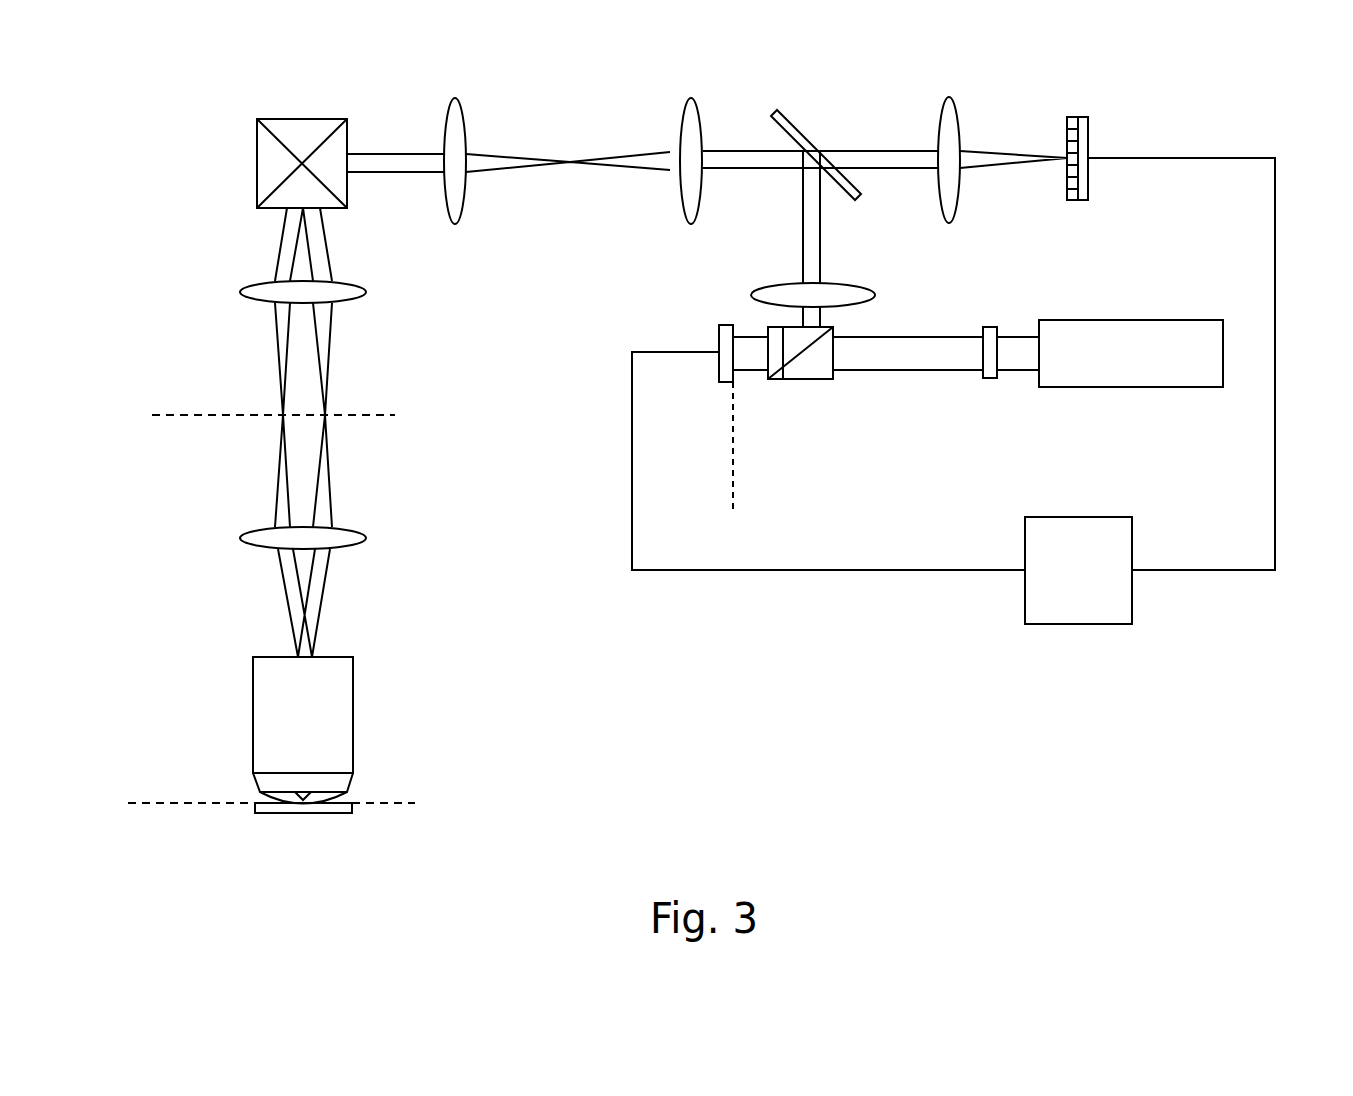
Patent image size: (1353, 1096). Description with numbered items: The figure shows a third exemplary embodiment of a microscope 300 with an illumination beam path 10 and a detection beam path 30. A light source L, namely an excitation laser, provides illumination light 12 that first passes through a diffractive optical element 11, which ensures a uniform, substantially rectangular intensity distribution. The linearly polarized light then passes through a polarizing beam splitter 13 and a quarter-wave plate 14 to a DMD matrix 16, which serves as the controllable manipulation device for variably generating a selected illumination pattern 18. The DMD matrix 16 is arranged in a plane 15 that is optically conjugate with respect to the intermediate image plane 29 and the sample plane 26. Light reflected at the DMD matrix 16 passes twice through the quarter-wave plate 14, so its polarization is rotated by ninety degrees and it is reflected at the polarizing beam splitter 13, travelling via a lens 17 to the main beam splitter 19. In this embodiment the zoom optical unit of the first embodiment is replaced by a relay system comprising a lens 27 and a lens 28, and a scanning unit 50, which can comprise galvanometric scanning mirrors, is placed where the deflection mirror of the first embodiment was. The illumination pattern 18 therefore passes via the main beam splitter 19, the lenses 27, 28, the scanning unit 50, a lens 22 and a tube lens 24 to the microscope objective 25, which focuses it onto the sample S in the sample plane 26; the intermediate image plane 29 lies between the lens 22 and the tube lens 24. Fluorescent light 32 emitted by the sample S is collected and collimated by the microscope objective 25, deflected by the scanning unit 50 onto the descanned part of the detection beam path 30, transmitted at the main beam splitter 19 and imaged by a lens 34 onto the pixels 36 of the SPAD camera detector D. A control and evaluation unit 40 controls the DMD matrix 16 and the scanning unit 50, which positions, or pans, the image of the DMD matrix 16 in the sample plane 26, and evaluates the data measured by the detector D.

The illumination beam path 10 is at (940, 268).
The diffractive optical element 11 is at (990, 382).
The illumination light 12 is at (893, 372).
The polarizing beam splitter 13 is at (818, 383).
The quarter-wave plate 14 is at (780, 383).
The plane 15 is at (733, 487).
The DMD matrix 16 is at (720, 372).
The lens 17 is at (758, 292).
The illumination pattern 18 is at (803, 238).
The main beam splitter 19 is at (790, 122).
The lens 22 is at (250, 292).
The tube lens 24 is at (250, 538).
The microscope objective 25 is at (343, 702).
The sample plane 26 is at (172, 803).
The lens 27 is at (691, 98).
The lens 28 is at (455, 100).
The intermediate image plane 29 is at (172, 418).
The detection beam path 30 is at (875, 112).
The fluorescent light 32 is at (880, 170).
The lens 34 is at (949, 97).
The pixels 36 is at (1072, 125).
The control and evaluation unit 40 is at (1070, 585).
The scanning unit 50 is at (300, 132).
The microscope 300 is at (590, 655).
The detector D is at (1087, 128).
The light source L is at (1113, 367).
The sample S is at (297, 813).